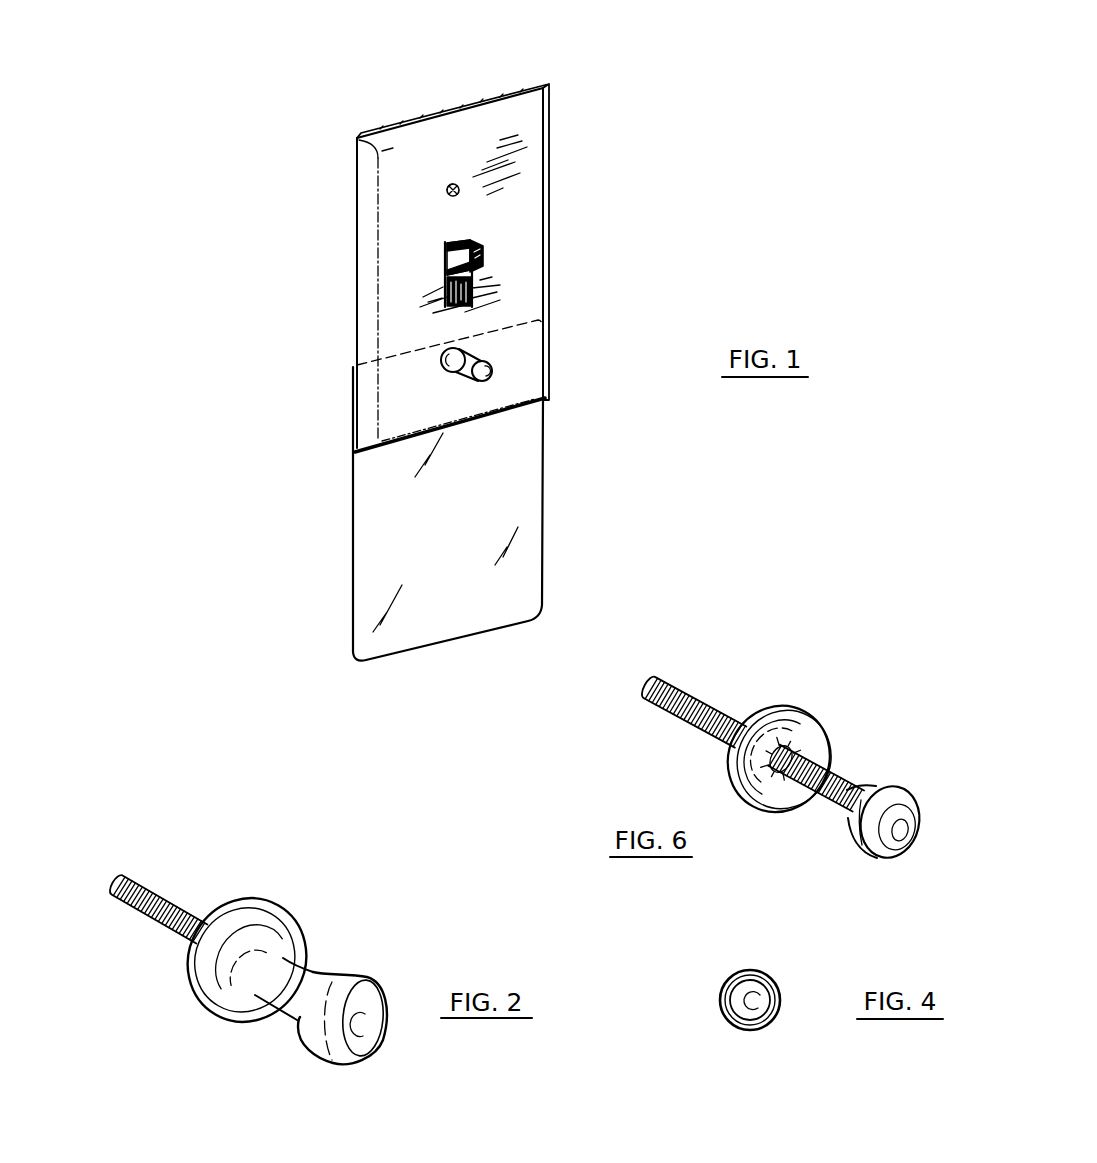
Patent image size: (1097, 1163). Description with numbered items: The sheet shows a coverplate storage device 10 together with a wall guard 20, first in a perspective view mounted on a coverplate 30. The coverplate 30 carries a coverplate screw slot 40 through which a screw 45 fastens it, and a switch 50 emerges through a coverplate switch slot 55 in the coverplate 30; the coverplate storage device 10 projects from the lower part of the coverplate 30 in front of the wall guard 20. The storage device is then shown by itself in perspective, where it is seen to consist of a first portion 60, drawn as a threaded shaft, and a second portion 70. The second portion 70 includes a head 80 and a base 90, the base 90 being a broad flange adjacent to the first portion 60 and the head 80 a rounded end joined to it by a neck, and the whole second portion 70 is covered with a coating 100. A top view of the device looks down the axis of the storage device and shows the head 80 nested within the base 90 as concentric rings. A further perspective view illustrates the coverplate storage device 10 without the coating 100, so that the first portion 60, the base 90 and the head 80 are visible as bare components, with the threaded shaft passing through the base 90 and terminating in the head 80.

In FIG. 1, the coverplate storage device 10 is at (497, 368).
In FIG. 2, the coverplate storage device 10 is at (166, 859).
In FIG. 1, the wall guard 20 is at (547, 508).
In FIG. 1, the coverplate 30 is at (532, 161).
In FIG. 1, the coverplate screw slot 40 is at (456, 184).
In FIG. 1, the screw 45 is at (447, 193).
In FIG. 1, the switch 50 is at (484, 248).
In FIG. 1, the coverplate switch slot 55 is at (473, 276).
In FIG. 6, the first portion 60 is at (666, 650).
In FIG. 2, the first portion 60 is at (89, 921).
In FIG. 6, the second portion 70 is at (726, 808).
In FIG. 2, the second portion 70 is at (193, 1017).
In FIG. 6, the head 80 is at (897, 785).
In FIG. 2, the head 80 is at (372, 978).
In FIG. 4, the head 80 is at (768, 1022).
In FIG. 6, the base 90 is at (809, 703).
In FIG. 2, the base 90 is at (275, 899).
In FIG. 4, the base 90 is at (731, 1022).
In FIG. 2, the coating 100 is at (305, 972).